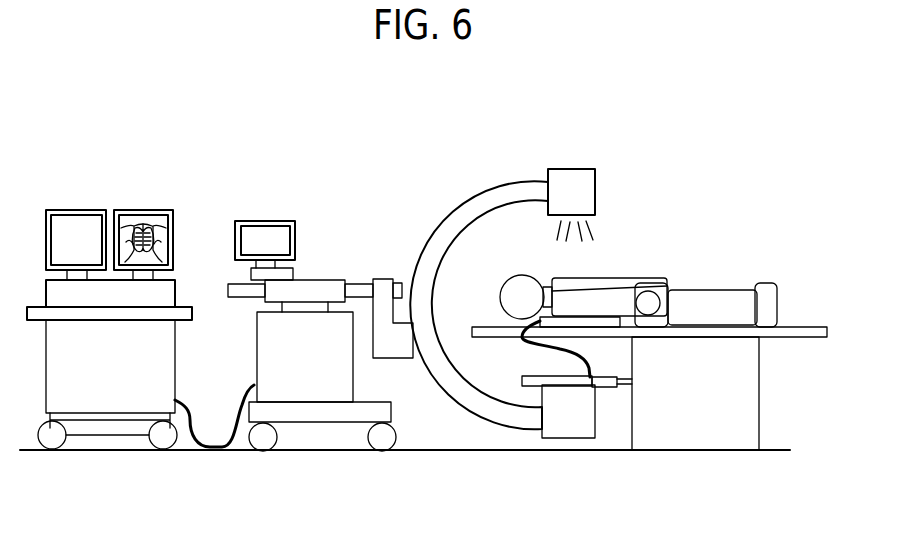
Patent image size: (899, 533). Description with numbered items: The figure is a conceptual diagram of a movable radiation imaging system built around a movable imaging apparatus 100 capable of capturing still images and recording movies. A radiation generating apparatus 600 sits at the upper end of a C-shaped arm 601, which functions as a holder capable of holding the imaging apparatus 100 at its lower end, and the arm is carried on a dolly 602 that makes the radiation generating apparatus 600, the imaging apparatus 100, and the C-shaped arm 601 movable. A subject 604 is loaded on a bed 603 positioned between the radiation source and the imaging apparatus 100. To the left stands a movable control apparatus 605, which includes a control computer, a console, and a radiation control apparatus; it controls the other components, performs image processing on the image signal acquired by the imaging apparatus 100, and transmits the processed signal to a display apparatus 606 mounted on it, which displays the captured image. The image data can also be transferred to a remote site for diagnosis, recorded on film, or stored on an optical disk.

The imaging apparatus 100 is at (622, 322).
The radiation generating apparatus 600 is at (596, 196).
The C-shaped arm 601 is at (433, 247).
The dolly 602 is at (321, 412).
The bed 603 is at (745, 338).
The subject 604 is at (733, 290).
The control apparatus 605 is at (107, 399).
The display apparatus 606 is at (147, 210).